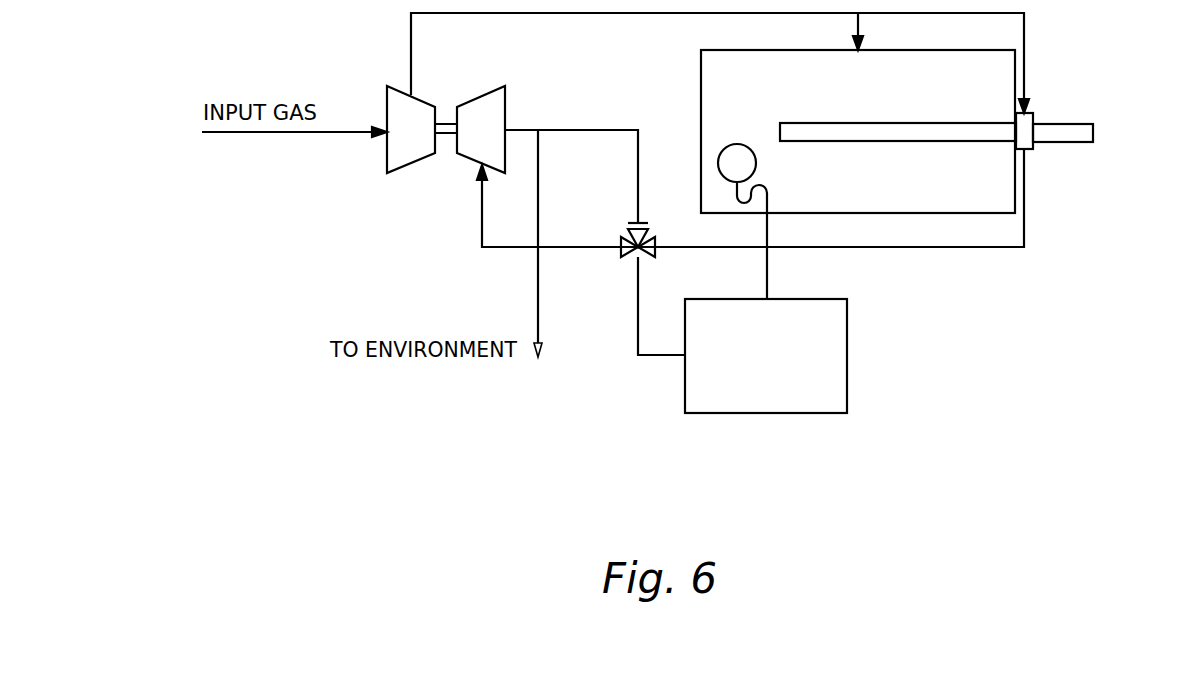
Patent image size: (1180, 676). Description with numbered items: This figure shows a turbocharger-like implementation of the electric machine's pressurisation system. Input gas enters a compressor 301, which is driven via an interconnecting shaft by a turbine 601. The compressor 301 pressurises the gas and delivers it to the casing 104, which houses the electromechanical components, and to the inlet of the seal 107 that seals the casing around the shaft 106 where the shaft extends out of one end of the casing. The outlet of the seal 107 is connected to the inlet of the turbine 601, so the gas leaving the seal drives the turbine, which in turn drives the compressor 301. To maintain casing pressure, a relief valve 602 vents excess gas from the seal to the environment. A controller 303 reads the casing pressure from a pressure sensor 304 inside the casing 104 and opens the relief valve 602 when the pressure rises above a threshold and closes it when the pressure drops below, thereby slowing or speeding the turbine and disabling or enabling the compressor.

The compressor 301 is at (393, 162).
The turbine 601 is at (505, 88).
The relief valve 602 is at (628, 236).
The pressure sensor 304 is at (728, 146).
The casing 104 is at (1016, 182).
The seal 107 is at (1033, 113).
The shaft 106 is at (1087, 132).
The controller 303 is at (840, 398).